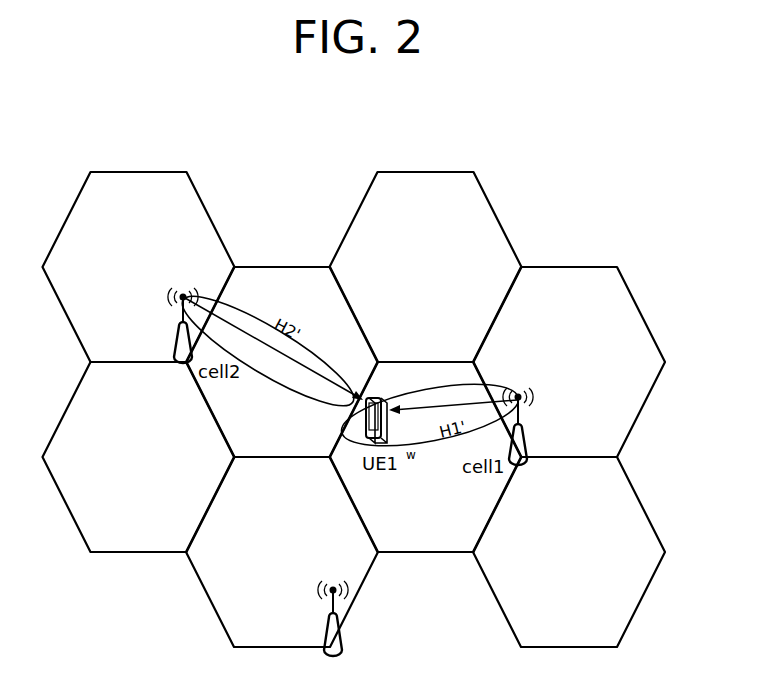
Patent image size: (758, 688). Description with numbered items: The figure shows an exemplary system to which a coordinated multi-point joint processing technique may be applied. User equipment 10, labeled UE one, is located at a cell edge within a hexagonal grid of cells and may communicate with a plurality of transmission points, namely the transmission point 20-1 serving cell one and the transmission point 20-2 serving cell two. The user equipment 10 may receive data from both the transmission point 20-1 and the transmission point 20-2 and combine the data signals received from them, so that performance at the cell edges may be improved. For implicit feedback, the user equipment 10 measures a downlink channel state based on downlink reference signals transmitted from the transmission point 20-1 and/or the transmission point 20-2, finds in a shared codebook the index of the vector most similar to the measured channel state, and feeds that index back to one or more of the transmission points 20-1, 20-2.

The transmission point 20-2 is at (183, 282).
The transmission point 20-1 is at (537, 405).
The user equipment 10 is at (387, 474).